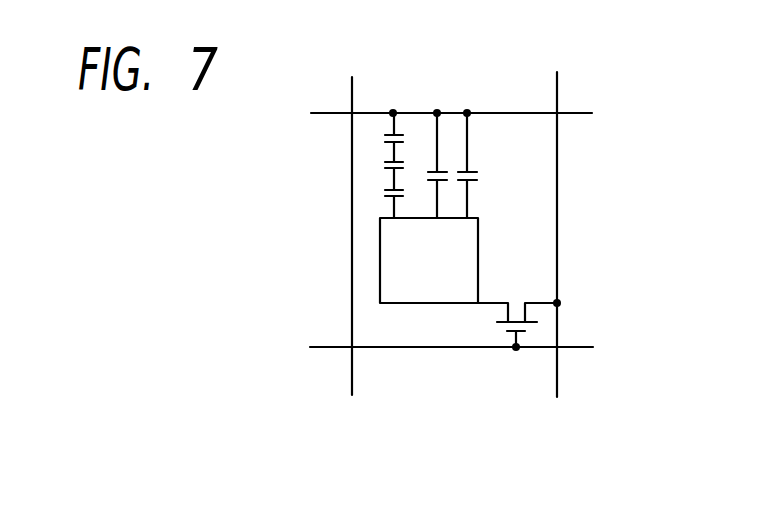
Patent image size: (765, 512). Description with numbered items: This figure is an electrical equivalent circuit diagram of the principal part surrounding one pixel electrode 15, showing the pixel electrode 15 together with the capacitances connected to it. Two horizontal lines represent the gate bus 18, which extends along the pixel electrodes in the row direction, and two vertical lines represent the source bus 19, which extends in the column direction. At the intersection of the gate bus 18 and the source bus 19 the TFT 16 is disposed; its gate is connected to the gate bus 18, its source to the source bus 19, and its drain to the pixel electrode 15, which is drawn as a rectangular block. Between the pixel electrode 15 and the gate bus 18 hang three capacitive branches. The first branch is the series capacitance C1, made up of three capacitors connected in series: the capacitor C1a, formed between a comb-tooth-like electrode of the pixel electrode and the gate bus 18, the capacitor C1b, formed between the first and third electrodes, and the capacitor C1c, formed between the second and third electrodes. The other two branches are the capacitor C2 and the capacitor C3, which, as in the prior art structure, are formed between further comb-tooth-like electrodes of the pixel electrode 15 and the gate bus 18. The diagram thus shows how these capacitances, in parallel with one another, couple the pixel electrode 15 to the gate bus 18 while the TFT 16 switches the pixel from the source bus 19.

The pixel electrode 15 is at (382, 252).
The TFT 16 is at (497, 330).
The gate bus 18 is at (325, 109).
The source bus 19 is at (355, 372).
The series capacitance C1 is at (318, 168).
The capacitor C1a is at (377, 135).
The capacitor C1b is at (377, 163).
The capacitor C1c is at (377, 197).
The capacitor C2 is at (445, 168).
The capacitor C3 is at (472, 168).